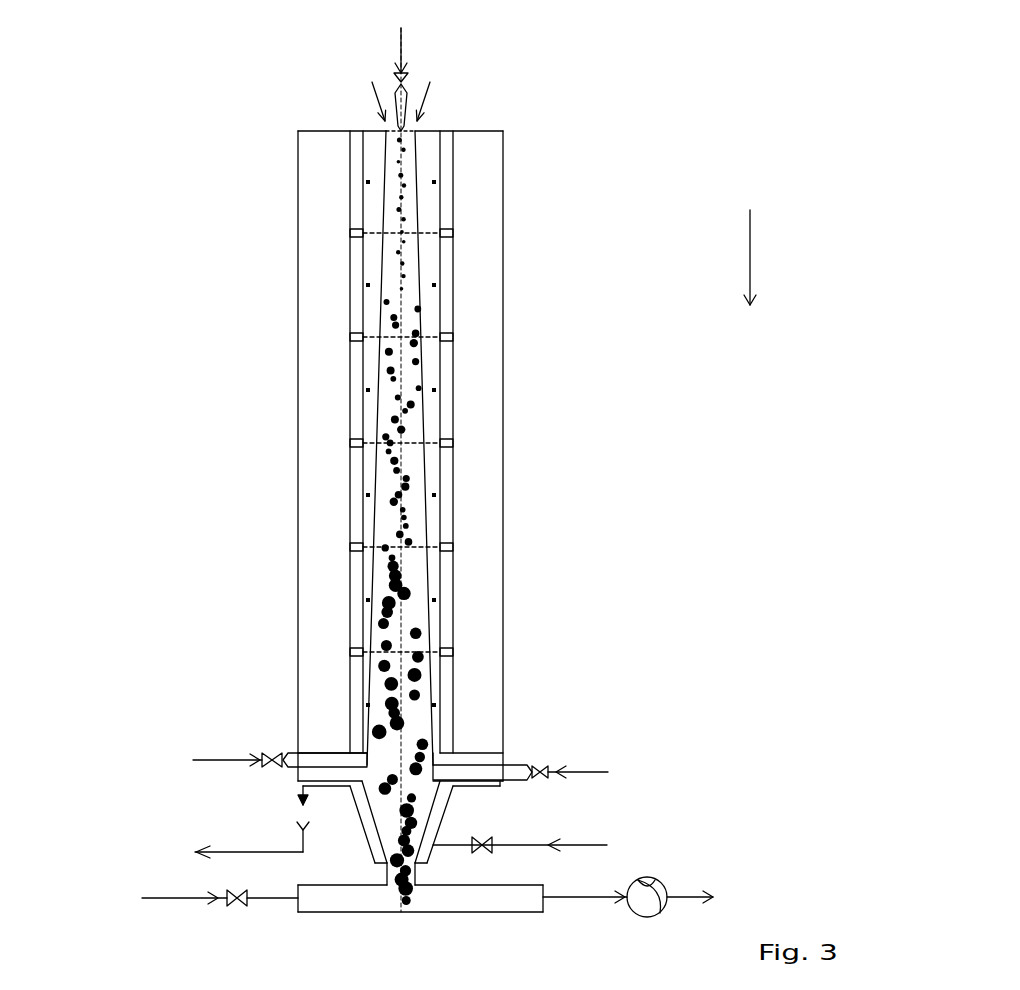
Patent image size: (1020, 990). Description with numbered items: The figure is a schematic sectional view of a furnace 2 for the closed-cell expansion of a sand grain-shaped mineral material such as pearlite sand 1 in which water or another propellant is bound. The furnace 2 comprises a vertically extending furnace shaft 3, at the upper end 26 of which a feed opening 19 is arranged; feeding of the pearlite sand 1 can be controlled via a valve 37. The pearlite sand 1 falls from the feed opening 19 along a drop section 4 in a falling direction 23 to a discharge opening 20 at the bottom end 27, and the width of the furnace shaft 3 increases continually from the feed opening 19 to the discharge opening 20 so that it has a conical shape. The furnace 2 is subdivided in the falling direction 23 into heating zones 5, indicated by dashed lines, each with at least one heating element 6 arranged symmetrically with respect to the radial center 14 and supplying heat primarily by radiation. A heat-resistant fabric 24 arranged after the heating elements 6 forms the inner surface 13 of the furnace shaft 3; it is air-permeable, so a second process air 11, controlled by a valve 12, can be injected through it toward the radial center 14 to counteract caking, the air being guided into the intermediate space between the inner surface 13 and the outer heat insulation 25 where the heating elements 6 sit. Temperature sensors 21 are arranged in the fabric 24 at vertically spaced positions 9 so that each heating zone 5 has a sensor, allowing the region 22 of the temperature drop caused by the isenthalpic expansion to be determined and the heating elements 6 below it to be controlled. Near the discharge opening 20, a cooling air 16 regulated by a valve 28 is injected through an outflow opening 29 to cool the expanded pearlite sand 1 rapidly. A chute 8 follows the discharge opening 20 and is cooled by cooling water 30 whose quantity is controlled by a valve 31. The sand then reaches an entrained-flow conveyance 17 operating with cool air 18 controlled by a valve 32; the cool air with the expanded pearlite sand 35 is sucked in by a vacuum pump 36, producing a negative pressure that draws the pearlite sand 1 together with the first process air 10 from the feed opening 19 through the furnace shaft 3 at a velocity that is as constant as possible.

The pearlite sand 1 is at (401, 73).
The furnace 2 is at (297, 198).
The furnace shaft 3 is at (410, 223).
The drop section 4 is at (402, 163).
The radial center 14 is at (493, 423).
The heating zones 5 is at (373, 312).
The heating element 6 is at (447, 287).
The chute 8 is at (372, 837).
The positions 9 is at (370, 283).
The temperature sensors 21 is at (433, 442).
The first process air 10 is at (387, 131).
The second process air 11 is at (205, 762).
The valve 12 is at (270, 755).
The inner surface 13 is at (423, 447).
The cooling air 16 is at (588, 772).
The entrained-flow conveyance 17 is at (397, 900).
The cool air 18 is at (173, 898).
The feed opening 19 is at (413, 131).
The discharge opening 20 is at (420, 768).
The region 22 is at (400, 565).
The falling direction 23 is at (739, 246).
The heat-resistant fabric 24 is at (427, 253).
The outer heat insulation 25 is at (338, 505).
The upper end 26 is at (385, 130).
The bottom end 27 is at (365, 765).
The valve 28 is at (542, 770).
The outflow opening 29 is at (440, 773).
The cooling water 30 is at (240, 852).
The valve 31 is at (486, 842).
The valve 32 is at (233, 903).
The cool air with the expanded pearlite sand 35 is at (588, 898).
The vacuum pump 36 is at (663, 880).
The valve 37 is at (403, 74).